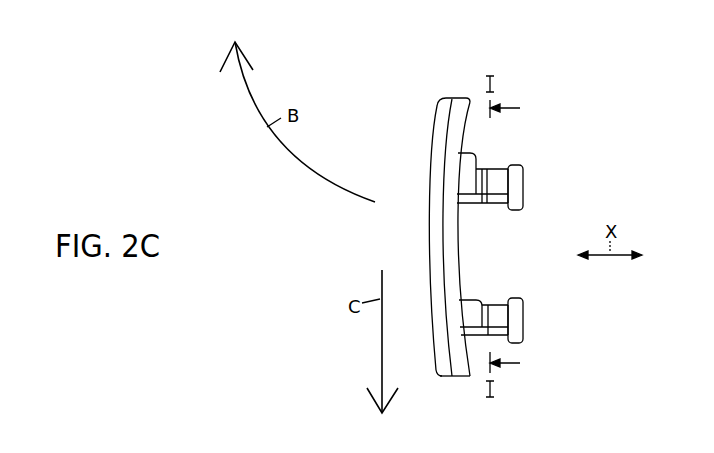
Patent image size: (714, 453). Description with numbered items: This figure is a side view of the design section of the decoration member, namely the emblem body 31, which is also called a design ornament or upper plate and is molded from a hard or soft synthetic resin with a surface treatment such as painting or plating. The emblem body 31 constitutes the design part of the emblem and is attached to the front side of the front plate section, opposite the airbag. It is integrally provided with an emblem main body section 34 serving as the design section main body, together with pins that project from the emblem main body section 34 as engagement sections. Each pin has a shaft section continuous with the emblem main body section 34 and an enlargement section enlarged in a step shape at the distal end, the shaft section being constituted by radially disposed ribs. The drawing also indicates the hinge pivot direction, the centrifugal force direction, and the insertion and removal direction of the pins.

The emblem body 31 is at (415, 56).
The emblem main body section 34 is at (436, 121).